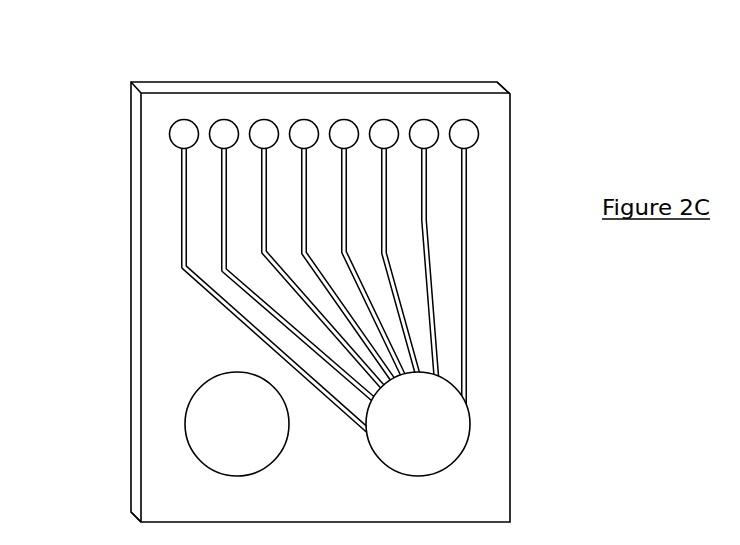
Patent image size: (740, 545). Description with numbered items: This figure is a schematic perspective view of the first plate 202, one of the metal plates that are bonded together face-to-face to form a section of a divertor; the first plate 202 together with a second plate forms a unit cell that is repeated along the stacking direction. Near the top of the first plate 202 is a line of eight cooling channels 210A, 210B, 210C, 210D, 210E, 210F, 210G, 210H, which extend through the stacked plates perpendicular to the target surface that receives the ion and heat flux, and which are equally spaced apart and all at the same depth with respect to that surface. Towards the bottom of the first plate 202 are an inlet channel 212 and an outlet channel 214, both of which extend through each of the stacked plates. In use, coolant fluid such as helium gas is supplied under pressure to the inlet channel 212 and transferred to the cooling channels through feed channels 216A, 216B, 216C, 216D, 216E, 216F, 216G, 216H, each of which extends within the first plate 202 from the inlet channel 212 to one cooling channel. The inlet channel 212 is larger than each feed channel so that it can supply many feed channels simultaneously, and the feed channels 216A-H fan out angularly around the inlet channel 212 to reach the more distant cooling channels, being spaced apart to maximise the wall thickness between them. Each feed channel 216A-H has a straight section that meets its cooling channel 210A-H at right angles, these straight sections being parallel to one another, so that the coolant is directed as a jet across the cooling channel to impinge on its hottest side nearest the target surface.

The first plate 202 is at (106, 115).
The cooling channel 210A is at (182, 126).
The cooling channel 210B is at (224, 134).
The cooling channel 210C is at (264, 134).
The cooling channel 210D is at (304, 134).
The cooling channel 210E is at (344, 134).
The cooling channel 210F is at (384, 134).
The cooling channel 210G is at (424, 134).
The cooling channel 210H is at (458, 125).
The feed channel 216A is at (180, 167).
The feed channel 216B is at (302, 269).
The feed channel 216C is at (326, 263).
The feed channel 216D is at (350, 259).
The feed channel 216E is at (375, 258).
The feed channel 216F is at (402, 258).
The feed channel 216G is at (430, 258).
The feed channel 216H is at (468, 283).
The inlet channel 212 is at (413, 427).
The outlet channel 214 is at (240, 423).